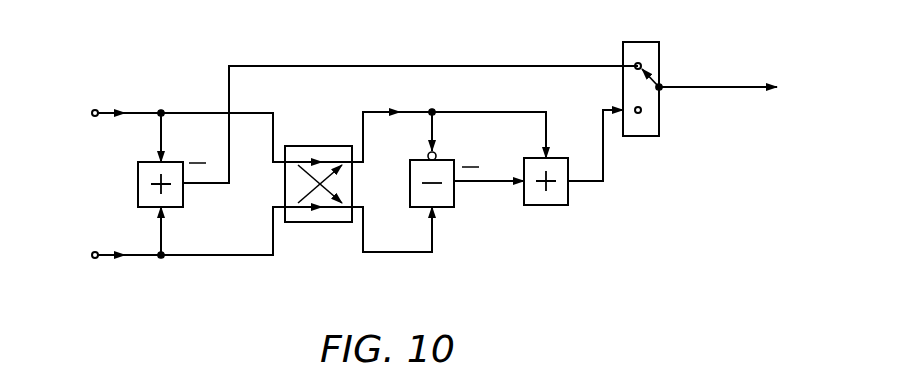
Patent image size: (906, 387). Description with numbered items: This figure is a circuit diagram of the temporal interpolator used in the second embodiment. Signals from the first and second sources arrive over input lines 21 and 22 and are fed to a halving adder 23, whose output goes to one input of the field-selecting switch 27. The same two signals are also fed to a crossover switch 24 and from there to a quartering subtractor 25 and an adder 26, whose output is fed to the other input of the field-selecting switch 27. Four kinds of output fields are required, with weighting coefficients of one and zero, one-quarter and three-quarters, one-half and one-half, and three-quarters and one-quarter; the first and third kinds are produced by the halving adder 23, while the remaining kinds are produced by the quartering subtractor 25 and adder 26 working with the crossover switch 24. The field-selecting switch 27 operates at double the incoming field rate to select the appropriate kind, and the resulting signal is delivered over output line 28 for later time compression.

The line 21 is at (108, 112).
The line 22 is at (102, 256).
The halving adder 23 is at (183, 206).
The crossover switch S4 24 is at (297, 146).
The quartering subtractor 25 is at (454, 205).
The adder 26 is at (568, 204).
The switch S5 27 is at (659, 43).
The line 28 is at (690, 88).